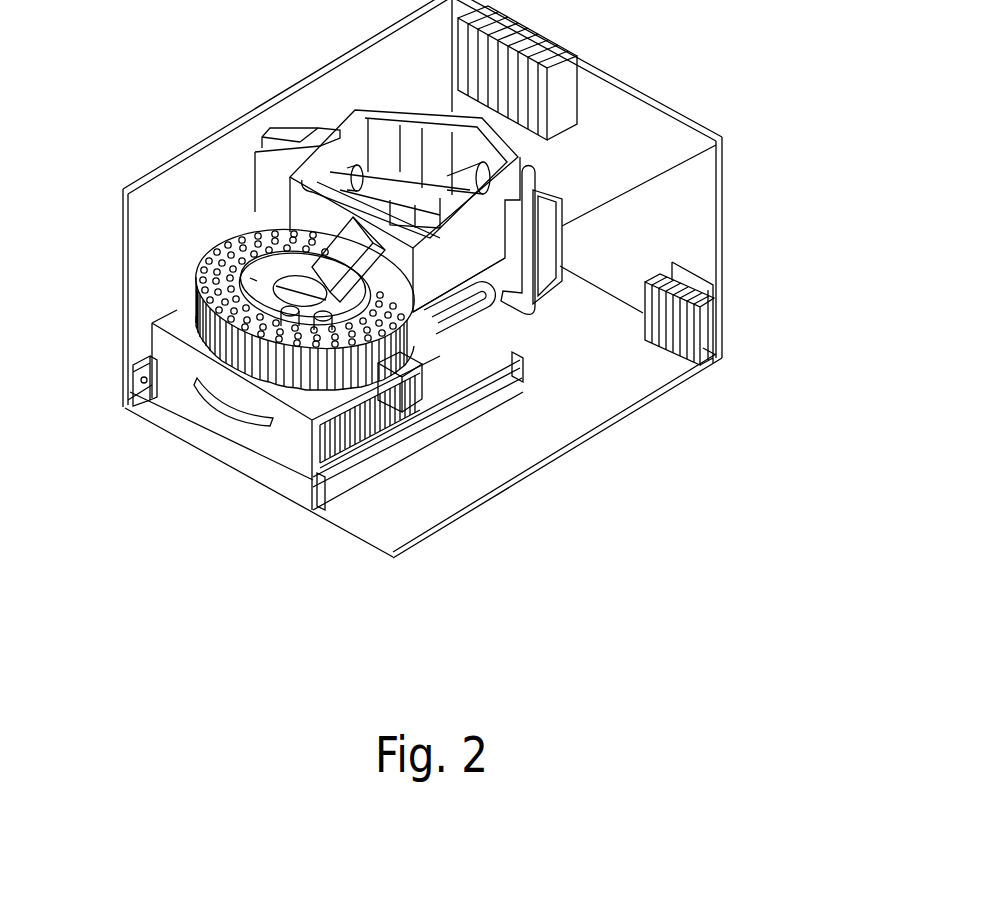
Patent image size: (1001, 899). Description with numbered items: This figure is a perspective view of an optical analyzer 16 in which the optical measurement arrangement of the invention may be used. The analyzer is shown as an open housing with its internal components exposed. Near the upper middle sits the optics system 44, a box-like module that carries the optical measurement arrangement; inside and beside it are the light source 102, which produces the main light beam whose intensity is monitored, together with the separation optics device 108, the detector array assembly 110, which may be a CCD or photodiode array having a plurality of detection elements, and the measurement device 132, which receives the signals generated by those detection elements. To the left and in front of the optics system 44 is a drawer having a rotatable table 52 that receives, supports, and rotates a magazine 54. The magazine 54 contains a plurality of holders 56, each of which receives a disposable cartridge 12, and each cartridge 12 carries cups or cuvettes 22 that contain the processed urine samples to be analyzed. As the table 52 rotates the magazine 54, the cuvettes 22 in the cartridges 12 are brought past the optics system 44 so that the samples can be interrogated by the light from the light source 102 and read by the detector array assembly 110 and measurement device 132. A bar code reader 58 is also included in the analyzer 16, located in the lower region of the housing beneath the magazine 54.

The disposable cartridge 12 is at (218, 275).
The optical analyzer 16 is at (653, 55).
The cuvette 22 is at (230, 268).
The optics system 44 is at (348, 112).
The rotatable table 52 is at (251, 388).
The magazine 54 is at (218, 243).
The holder 56 is at (163, 388).
The bar code reader 58 is at (326, 518).
The light source 102 is at (353, 302).
The separation optics device 108 is at (652, 205).
The detector array assembly 110 is at (652, 205).
The measurement device 132 is at (540, 170).